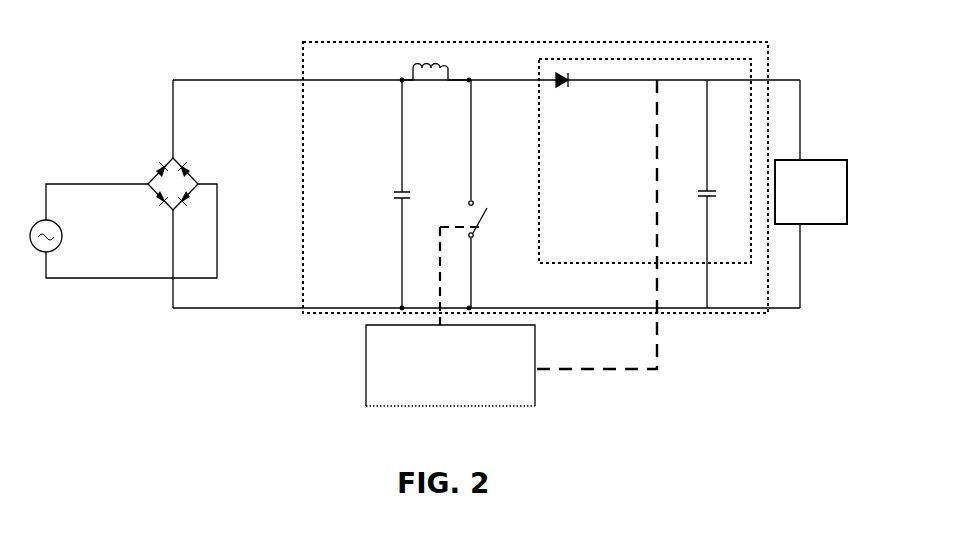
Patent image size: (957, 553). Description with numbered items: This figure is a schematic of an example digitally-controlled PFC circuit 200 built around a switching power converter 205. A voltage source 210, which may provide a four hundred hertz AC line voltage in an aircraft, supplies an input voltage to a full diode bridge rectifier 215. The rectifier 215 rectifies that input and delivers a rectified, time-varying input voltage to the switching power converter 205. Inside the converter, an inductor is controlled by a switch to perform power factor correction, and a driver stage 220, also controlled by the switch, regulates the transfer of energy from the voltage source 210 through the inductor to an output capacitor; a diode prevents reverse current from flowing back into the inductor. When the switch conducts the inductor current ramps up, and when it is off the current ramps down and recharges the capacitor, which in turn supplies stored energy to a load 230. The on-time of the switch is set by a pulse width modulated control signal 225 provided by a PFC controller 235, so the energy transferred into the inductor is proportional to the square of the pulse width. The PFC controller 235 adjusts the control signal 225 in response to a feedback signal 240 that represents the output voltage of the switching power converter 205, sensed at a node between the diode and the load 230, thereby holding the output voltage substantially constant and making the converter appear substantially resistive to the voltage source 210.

The PFC circuit 200 is at (210, 413).
The switching power converter 205 is at (558, 42).
The voltage source 210 is at (63, 233).
The diode bridge rectifier 215 is at (198, 157).
The driver stage 220 is at (702, 58).
The control signal 225 is at (438, 278).
The load 230 is at (828, 213).
The PFC controller 235 is at (387, 403).
The feedback signal 240 is at (593, 370).